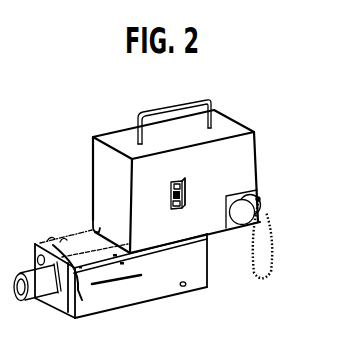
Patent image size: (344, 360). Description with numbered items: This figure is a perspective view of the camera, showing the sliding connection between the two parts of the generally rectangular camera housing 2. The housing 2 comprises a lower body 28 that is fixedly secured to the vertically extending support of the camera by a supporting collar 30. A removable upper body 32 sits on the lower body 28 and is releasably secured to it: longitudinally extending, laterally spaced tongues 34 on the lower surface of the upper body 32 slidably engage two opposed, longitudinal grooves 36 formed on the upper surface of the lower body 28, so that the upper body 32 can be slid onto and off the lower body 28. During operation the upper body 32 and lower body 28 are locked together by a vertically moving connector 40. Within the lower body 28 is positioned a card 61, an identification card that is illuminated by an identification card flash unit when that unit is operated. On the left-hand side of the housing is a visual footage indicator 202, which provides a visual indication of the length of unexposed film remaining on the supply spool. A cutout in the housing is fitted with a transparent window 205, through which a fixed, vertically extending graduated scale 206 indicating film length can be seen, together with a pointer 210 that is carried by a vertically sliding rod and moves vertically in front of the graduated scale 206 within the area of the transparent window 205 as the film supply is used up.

The camera housing 2 is at (89, 128).
The lower body 28 is at (180, 291).
The supporting collar 30 is at (40, 291).
The upper body 32 is at (196, 233).
The tongues 34 is at (92, 227).
The longitudinal grooves 36 is at (60, 236).
The connector 40 is at (78, 283).
The card 61 is at (124, 281).
The visual footage indicator 202 is at (193, 189).
The transparent window 205 is at (170, 198).
The graduated scale 206 is at (184, 204).
The pointer 210 is at (191, 189).